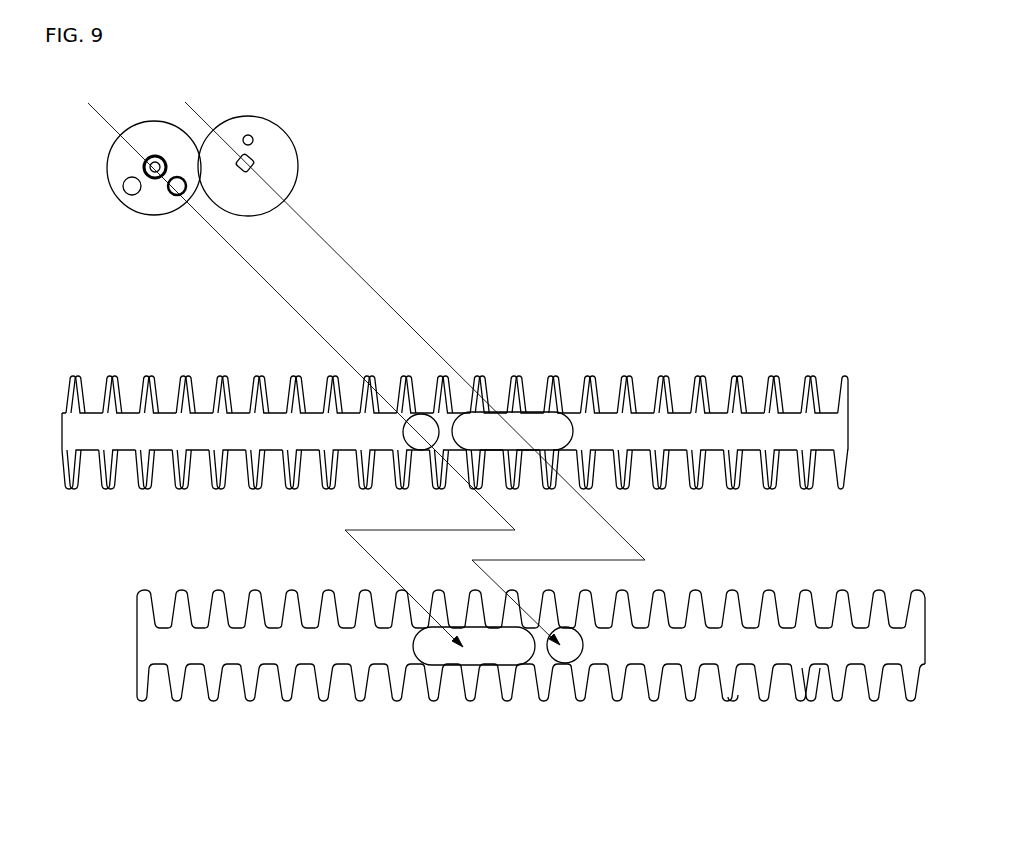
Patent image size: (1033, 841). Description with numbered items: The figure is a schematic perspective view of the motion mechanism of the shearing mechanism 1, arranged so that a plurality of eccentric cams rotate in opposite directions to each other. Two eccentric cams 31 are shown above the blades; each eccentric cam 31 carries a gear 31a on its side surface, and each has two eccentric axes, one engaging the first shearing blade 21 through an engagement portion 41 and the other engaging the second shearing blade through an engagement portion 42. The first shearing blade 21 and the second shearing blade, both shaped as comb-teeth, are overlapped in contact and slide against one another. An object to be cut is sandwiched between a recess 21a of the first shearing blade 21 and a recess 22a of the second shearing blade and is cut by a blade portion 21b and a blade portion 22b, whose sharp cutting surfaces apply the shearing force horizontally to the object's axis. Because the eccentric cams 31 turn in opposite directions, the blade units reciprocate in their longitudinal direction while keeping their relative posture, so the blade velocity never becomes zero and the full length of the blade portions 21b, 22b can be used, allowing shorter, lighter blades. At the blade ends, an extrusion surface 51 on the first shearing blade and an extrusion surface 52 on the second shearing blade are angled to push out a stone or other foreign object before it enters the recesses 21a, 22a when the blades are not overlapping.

The shearing mechanism 1 is at (835, 103).
The first shearing blade 21 is at (79, 376).
The recess 21a is at (202, 385).
The blade portion 21b is at (633, 397).
The recess 22a is at (265, 690).
The blade portion 22b is at (830, 673).
The eccentric cam 31 is at (268, 140).
The gear 31a is at (290, 190).
The engagement portion 41 is at (403, 434).
The engagement portion 42 is at (413, 650).
The extrusion surface 51 is at (694, 378).
The extrusion surface 52 is at (728, 697).